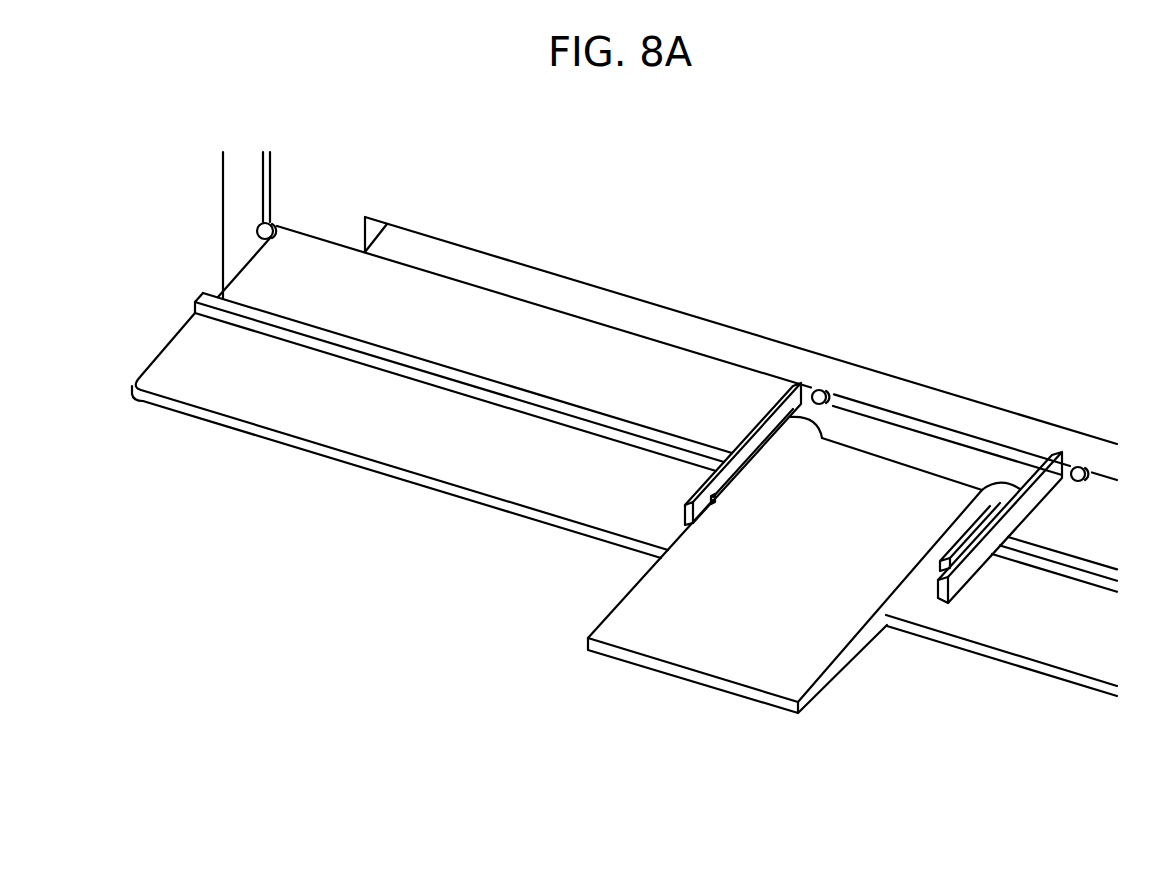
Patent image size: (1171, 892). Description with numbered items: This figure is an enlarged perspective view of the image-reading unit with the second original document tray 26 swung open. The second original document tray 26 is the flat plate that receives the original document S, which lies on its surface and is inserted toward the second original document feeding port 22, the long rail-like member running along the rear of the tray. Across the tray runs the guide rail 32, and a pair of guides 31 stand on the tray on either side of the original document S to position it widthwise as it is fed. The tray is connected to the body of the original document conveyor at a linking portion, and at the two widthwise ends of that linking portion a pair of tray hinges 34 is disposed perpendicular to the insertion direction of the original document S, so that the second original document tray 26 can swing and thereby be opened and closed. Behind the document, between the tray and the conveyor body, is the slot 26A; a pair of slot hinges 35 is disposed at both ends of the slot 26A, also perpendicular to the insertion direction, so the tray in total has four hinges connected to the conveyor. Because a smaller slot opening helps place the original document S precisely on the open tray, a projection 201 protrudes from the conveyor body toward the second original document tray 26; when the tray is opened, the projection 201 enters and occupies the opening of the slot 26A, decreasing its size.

The second original document feeding port 22 is at (622, 303).
The second original document tray 26 is at (247, 280).
The slot 26A is at (920, 433).
The guides 31 is at (683, 513).
The guide rail 32 is at (200, 297).
The tray hinges 34 is at (272, 222).
The slot hinges 35 is at (830, 400).
The projection 201 is at (980, 440).
The original document S is at (703, 665).